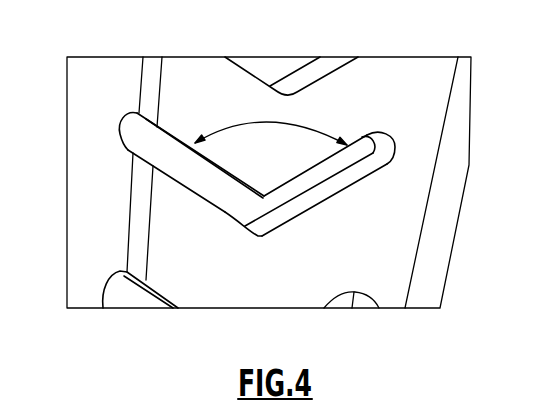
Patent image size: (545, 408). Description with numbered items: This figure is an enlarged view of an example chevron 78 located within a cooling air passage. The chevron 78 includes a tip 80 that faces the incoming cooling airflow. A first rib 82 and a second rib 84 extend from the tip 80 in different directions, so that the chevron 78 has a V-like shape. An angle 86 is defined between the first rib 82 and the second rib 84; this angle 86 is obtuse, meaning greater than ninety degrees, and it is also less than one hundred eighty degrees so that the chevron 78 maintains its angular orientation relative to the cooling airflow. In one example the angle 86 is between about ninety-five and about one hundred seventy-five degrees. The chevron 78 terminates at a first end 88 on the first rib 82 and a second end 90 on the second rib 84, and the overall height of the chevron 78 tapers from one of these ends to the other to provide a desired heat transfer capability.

The chevron 78 is at (219, 255).
The tip 80 is at (261, 233).
The first rib 82 is at (314, 197).
The second rib 84 is at (192, 178).
The angle 86 is at (304, 121).
The first end 88 is at (405, 140).
The second end 90 is at (120, 104).